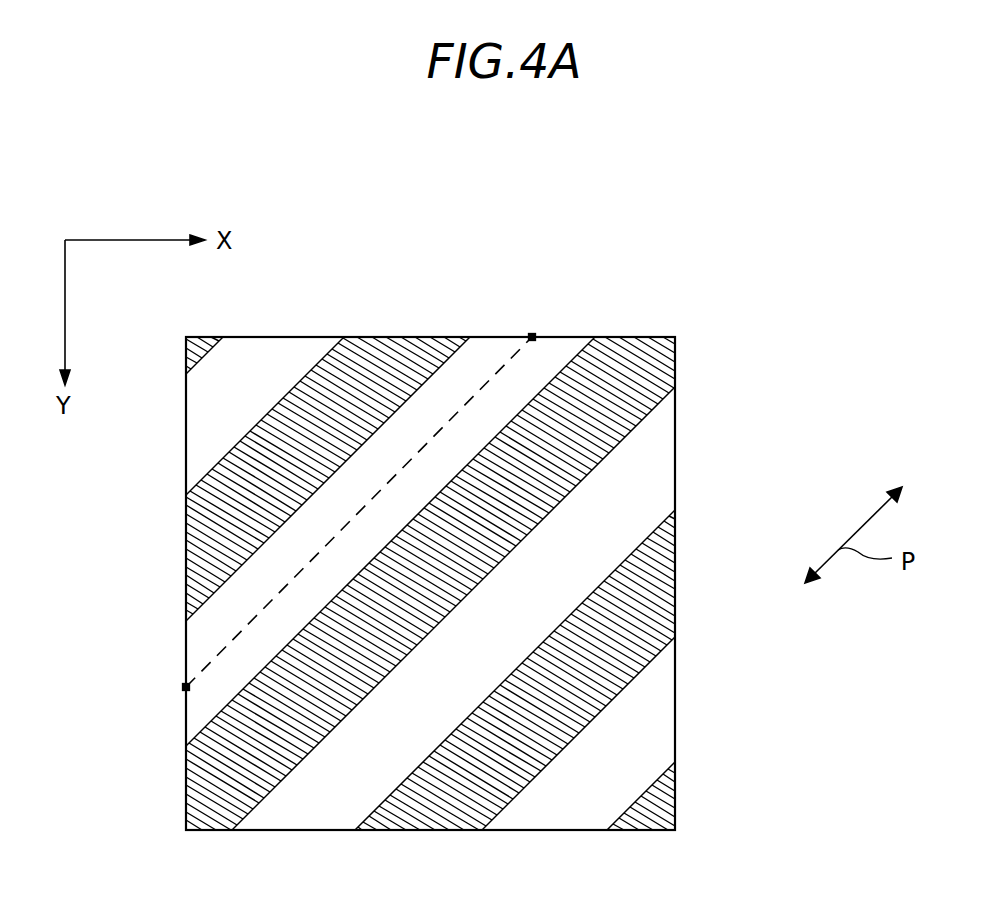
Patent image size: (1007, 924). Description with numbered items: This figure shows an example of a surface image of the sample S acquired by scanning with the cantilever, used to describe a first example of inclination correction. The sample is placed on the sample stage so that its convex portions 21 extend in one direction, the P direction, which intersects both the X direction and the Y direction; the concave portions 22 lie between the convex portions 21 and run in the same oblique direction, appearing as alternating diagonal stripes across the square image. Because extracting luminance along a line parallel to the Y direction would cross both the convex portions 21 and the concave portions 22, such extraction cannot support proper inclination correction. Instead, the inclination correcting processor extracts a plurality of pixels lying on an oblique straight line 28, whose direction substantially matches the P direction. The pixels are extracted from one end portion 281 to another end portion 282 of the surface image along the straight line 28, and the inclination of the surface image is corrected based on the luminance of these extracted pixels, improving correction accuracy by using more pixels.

The convex portion 21 is at (186, 352).
The concave portion 22 is at (240, 348).
The straight line 28 is at (500, 362).
The one end portion 281 is at (532, 337).
The another end portion 282 is at (182, 690).